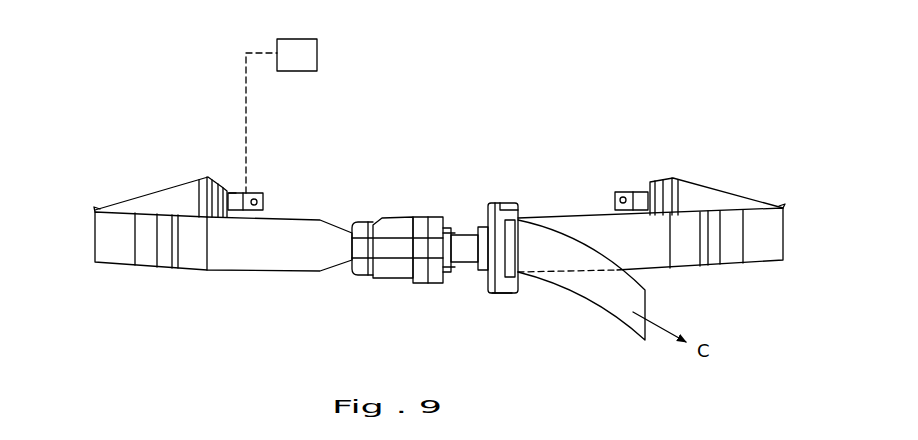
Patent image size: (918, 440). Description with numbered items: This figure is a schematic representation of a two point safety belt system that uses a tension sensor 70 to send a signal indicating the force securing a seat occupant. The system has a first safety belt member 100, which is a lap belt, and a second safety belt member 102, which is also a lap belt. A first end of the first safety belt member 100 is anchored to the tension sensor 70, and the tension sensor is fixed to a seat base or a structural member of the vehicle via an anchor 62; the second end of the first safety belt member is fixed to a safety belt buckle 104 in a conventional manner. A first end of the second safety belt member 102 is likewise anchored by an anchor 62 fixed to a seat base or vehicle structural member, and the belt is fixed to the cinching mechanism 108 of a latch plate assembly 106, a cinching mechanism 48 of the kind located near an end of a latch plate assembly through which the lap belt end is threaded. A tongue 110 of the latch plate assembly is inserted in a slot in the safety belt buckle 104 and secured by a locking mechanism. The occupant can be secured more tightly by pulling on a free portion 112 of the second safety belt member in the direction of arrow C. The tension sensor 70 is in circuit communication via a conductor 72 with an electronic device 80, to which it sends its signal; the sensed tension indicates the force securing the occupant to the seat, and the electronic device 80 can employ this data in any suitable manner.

The first safety belt member 100 is at (262, 247).
The second safety belt member 102 is at (771, 250).
The safety belt buckle 104 is at (398, 263).
The latch plate assembly 106 is at (460, 223).
The cinching mechanism 108 is at (502, 207).
The tongue 110 is at (455, 248).
The free portion 112 is at (607, 300).
The cinching mechanism 48 is at (505, 292).
The anchor 62 is at (253, 191).
The tension sensor 70 is at (233, 192).
The conductor 72 is at (243, 70).
The electronic device 80 is at (295, 60).